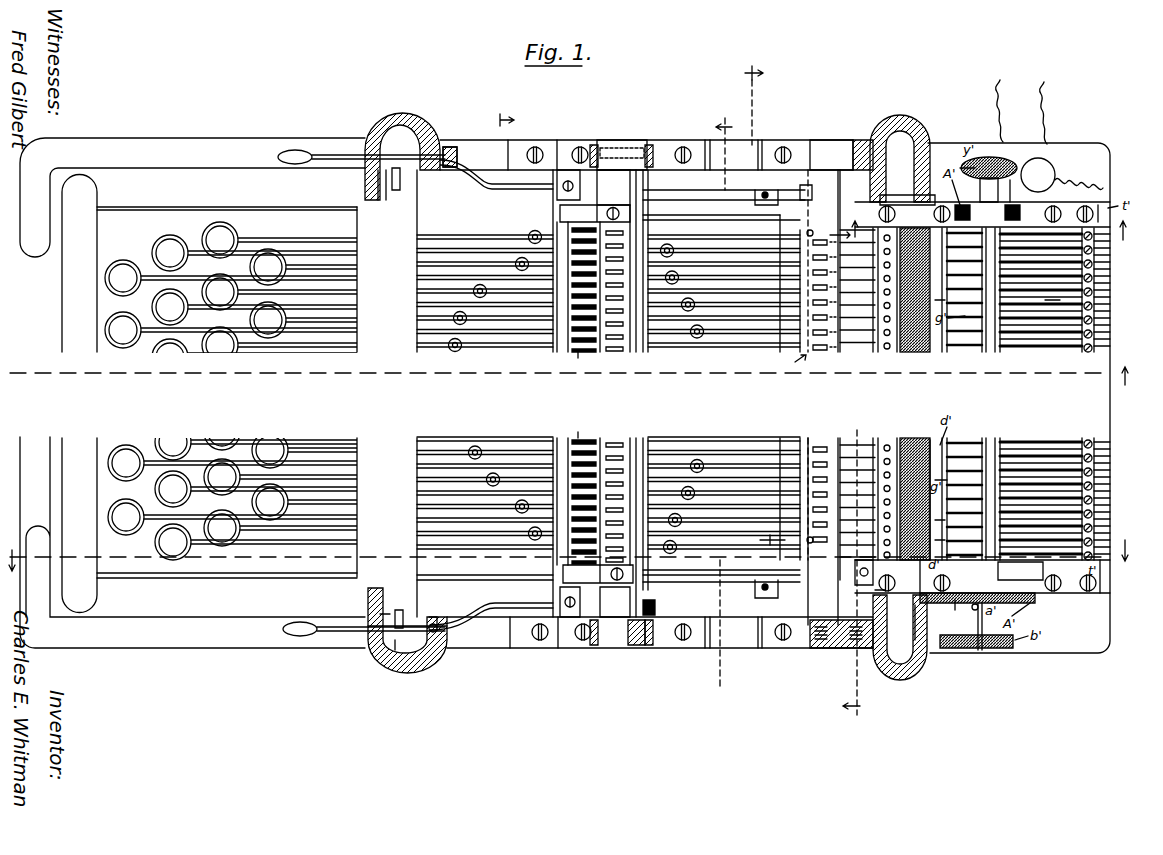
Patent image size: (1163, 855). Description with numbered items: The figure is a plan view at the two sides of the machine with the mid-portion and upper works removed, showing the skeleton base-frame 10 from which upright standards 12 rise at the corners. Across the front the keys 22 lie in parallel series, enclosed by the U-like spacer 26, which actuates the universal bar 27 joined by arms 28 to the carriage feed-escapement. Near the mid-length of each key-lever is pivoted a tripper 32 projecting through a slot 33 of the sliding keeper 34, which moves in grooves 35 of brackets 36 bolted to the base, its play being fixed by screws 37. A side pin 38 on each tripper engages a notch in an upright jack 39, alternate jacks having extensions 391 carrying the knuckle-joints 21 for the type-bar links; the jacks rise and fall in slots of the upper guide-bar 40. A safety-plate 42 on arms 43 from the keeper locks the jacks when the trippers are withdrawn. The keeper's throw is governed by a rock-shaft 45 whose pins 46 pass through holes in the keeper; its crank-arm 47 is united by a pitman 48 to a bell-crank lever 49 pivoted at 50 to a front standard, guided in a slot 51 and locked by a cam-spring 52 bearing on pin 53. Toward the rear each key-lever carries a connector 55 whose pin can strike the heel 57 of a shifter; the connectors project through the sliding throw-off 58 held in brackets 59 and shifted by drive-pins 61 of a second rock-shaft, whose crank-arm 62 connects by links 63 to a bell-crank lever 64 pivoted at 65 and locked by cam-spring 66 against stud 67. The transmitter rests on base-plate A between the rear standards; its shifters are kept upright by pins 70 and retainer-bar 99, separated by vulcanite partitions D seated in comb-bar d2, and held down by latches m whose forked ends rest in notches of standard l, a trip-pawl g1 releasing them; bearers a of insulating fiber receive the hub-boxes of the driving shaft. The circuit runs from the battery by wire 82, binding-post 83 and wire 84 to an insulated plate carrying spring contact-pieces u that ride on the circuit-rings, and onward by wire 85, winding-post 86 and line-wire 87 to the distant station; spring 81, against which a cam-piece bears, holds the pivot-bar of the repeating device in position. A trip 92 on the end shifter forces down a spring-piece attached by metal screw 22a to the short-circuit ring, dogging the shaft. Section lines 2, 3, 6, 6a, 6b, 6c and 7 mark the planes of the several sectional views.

The skeleton base-frame 10 is at (565, 395).
The upright standards 12 is at (410, 118).
The knuckle-joint 21 is at (457, 352).
The keys 22 is at (348, 305).
The U-like spacer 26 is at (298, 207).
The universal bar 27 is at (721, 410).
The arms 28 is at (760, 200).
The trippers 32 is at (670, 375).
The slots 33 is at (772, 540).
The keeper 34 is at (605, 445).
The grooves 35 is at (640, 648).
The brackets 36 is at (550, 663).
The screws 37 is at (600, 140).
The side pin 38 is at (588, 348).
The jacks 39 is at (580, 356).
The front and rear extensions 391 is at (527, 325).
The upper guide-bar 40 is at (567, 686).
The safety-plate 42 is at (562, 342).
The arms 43 is at (596, 394).
The rock-shaft 45 is at (648, 218).
The pins 46 is at (648, 234).
The crank-arm 47 is at (658, 607).
The pitman 48 is at (500, 620).
The bell-crank lever 49 is at (395, 662).
The pivot 50 is at (436, 636).
The slot 51 is at (362, 650).
The cam-spring 52 is at (380, 663).
The pin 53 is at (400, 610).
The connector 55 is at (824, 350).
The heel 57 is at (852, 352).
The sliding throw-off 58 is at (825, 397).
The brackets 59 is at (822, 668).
The drive-pins 61 is at (795, 593).
The crank-arm 62 is at (812, 193).
The links 63 is at (478, 188).
The bell-crank lever 64 is at (348, 166).
The pivot 65 is at (436, 150).
The cam-spring 66 is at (378, 188).
The stud 67 is at (396, 182).
The pins 70 is at (889, 352).
The spring 81 is at (890, 200).
The wire 82 is at (1052, 93).
The binding-post 83 is at (1038, 175).
The wire 84 is at (1108, 188).
The wire 85 is at (1012, 178).
The winding-post 86 is at (988, 157).
The line-wire 87 is at (1010, 92).
The trip 92 is at (1010, 606).
The retainer-bar 99 is at (863, 587).
The partitions D is at (935, 375).
The spring contact-pieces u is at (1065, 335).
The bearers a is at (1048, 339).
The base-plate A is at (881, 601).
The comb-bar d2 is at (1098, 210).
The trip-pawl g1 is at (928, 450).
The latches m is at (944, 525).
The metal screw 22a is at (950, 580).
The standard l is at (915, 645).
The section line 2 is at (1131, 376).
The section line 3 is at (570, 555).
The section line 6 is at (504, 398).
The section line 6a is at (724, 403).
The section line 6b is at (775, 212).
The section line 6c is at (850, 574).
The section line 7 is at (982, 233).